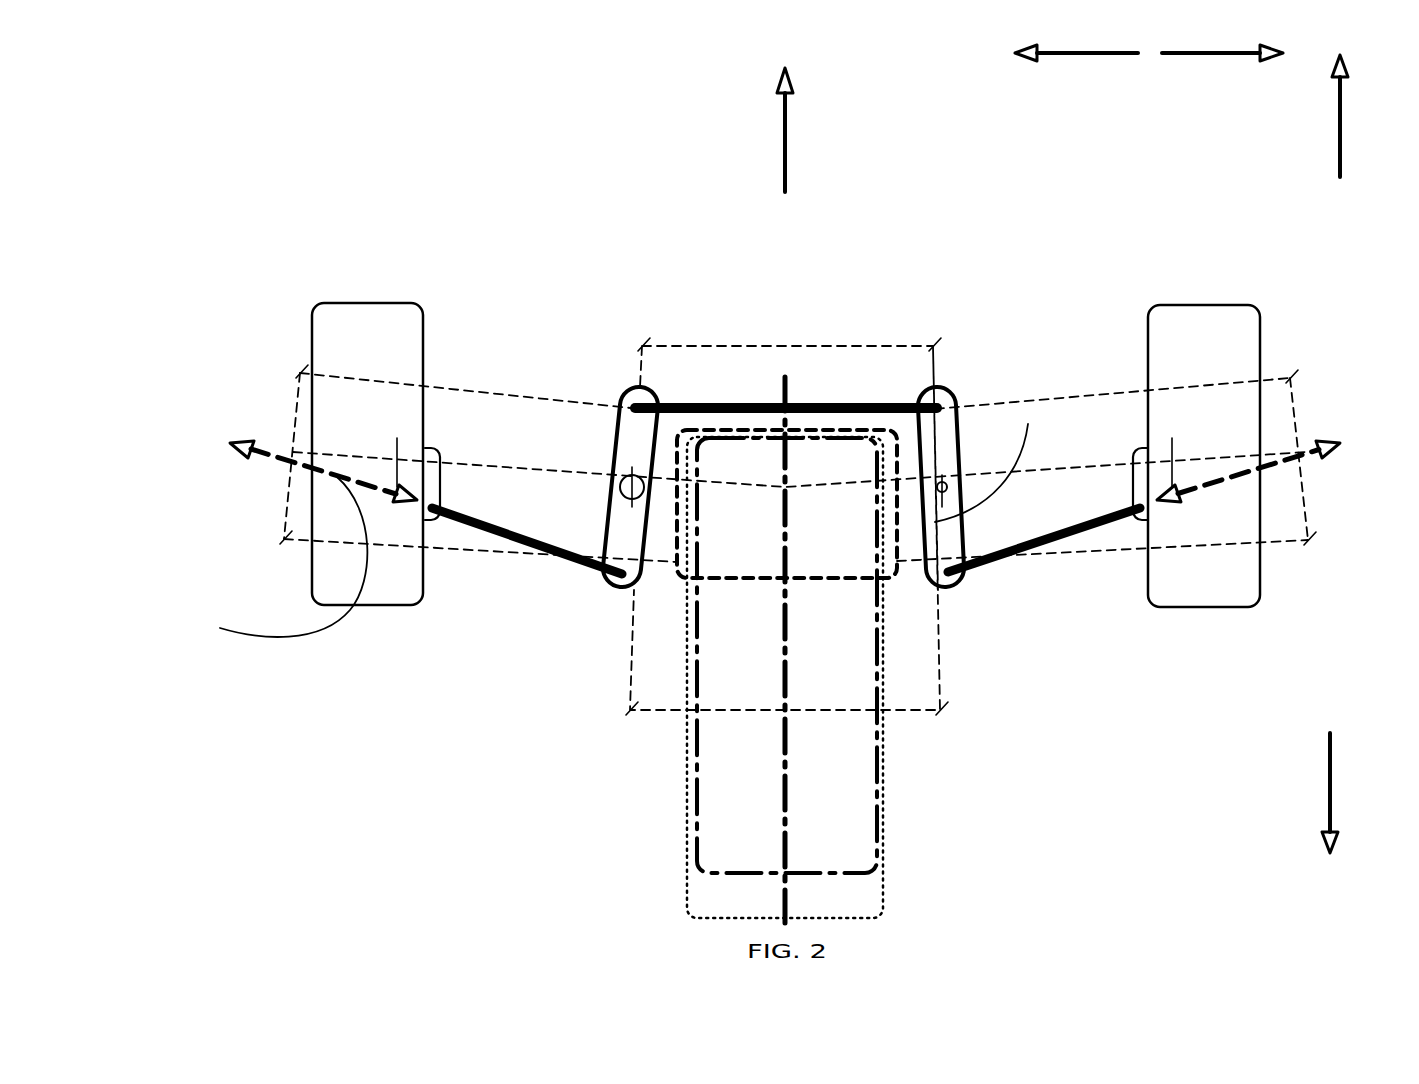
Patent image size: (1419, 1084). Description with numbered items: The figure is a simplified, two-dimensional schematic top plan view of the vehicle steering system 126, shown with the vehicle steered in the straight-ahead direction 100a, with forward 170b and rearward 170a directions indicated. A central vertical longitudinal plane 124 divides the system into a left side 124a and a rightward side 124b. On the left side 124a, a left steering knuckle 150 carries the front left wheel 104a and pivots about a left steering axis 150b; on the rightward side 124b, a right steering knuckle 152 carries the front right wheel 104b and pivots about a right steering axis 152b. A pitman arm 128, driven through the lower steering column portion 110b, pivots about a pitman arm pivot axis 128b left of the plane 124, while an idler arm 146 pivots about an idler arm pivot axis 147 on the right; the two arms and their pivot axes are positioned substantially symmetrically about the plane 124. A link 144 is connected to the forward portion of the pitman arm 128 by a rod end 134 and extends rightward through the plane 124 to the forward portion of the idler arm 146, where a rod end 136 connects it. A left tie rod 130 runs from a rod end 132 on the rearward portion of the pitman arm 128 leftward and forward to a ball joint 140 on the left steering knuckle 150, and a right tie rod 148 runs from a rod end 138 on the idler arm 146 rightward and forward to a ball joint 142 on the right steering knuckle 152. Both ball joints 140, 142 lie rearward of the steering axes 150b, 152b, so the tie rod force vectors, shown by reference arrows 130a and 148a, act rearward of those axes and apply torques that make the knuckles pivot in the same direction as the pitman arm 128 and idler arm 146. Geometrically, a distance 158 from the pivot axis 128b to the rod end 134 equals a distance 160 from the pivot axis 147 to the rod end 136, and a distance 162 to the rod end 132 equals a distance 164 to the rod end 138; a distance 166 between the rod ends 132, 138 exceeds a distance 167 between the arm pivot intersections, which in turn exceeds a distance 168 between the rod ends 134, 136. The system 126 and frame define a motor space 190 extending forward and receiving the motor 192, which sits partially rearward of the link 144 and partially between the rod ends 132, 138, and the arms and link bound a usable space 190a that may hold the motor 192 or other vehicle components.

The straight-ahead direction 100a is at (786, 130).
The front left wheel 104a is at (335, 325).
The front right wheel 104b is at (1240, 317).
The lower steering column portion 110b is at (600, 528).
The central vertical longitudinal plane 124 is at (800, 404).
The left side 124a is at (1078, 55).
The rightward side 124b is at (1210, 55).
The vehicle steering system 126 is at (266, 86).
The pitman arm 128 is at (630, 428).
The pitman arm pivot axis 128b is at (632, 474).
The left tie rod 130 is at (520, 545).
The reference arrow 130a is at (270, 557).
The rod end 132 is at (612, 583).
The rod end 134 is at (627, 388).
The rod end 136 is at (957, 402).
The rod end 138 is at (953, 590).
The ball joint 140 is at (435, 521).
The ball joint 142 is at (1130, 521).
The link 144 is at (725, 404).
The idler arm 146 is at (942, 480).
The idler arm pivot axis 147 is at (918, 405).
The right tie rod 148 is at (1030, 548).
The reference arrow 148a is at (1256, 604).
The left steering knuckle 150 is at (428, 462).
The left steering axis 150b is at (387, 462).
The right steering knuckle 152 is at (1140, 462).
The right steering axis 152b is at (1183, 462).
The distance 158 is at (295, 420).
The distance 160 is at (1293, 428).
The distance 162 is at (288, 498).
The distance 164 is at (1298, 510).
The distance 166 is at (677, 713).
The distance 167 is at (1028, 424).
The distance 168 is at (673, 345).
The rearward direction 170a is at (1330, 800).
The forward direction 170b is at (1337, 120).
The motor space 190 is at (883, 810).
The usable space 190a is at (858, 580).
The motor 192 is at (693, 607).